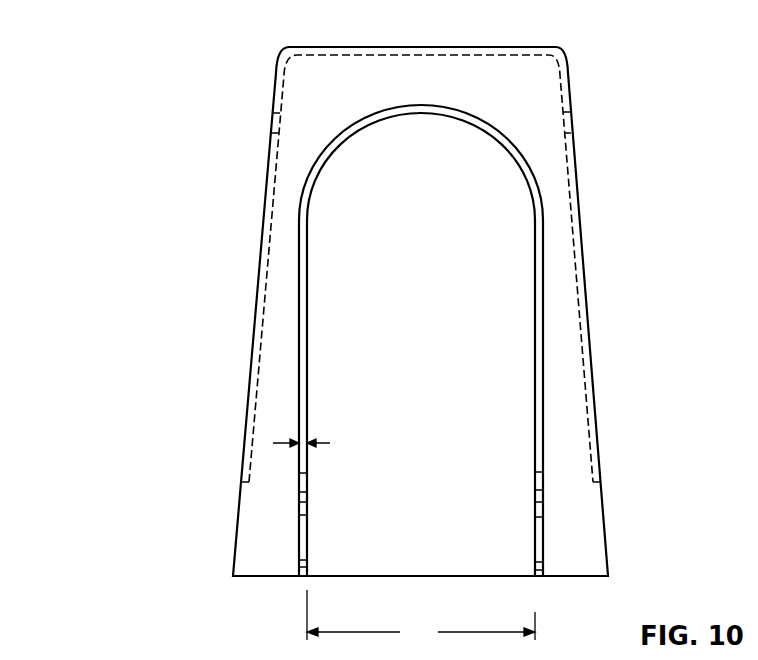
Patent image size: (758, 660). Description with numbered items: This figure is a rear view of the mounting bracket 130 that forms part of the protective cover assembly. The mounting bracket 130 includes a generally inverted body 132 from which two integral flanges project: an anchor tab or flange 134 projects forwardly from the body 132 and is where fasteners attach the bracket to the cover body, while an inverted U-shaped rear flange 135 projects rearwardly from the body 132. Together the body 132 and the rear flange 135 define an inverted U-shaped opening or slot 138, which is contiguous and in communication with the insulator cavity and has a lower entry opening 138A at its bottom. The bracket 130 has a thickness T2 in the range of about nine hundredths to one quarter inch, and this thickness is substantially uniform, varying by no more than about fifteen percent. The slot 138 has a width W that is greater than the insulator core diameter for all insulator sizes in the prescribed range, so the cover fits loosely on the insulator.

The mounting bracket 130 is at (200, 61).
The body 132 is at (577, 410).
The anchor tab or flange 134 is at (572, 176).
The inverted U-shaped rear flange 135 is at (303, 352).
The inverted U-shaped opening or slot 138 is at (442, 257).
The lower entry opening 138A is at (460, 542).
The thickness T2 is at (325, 443).
The width W is at (421, 617).